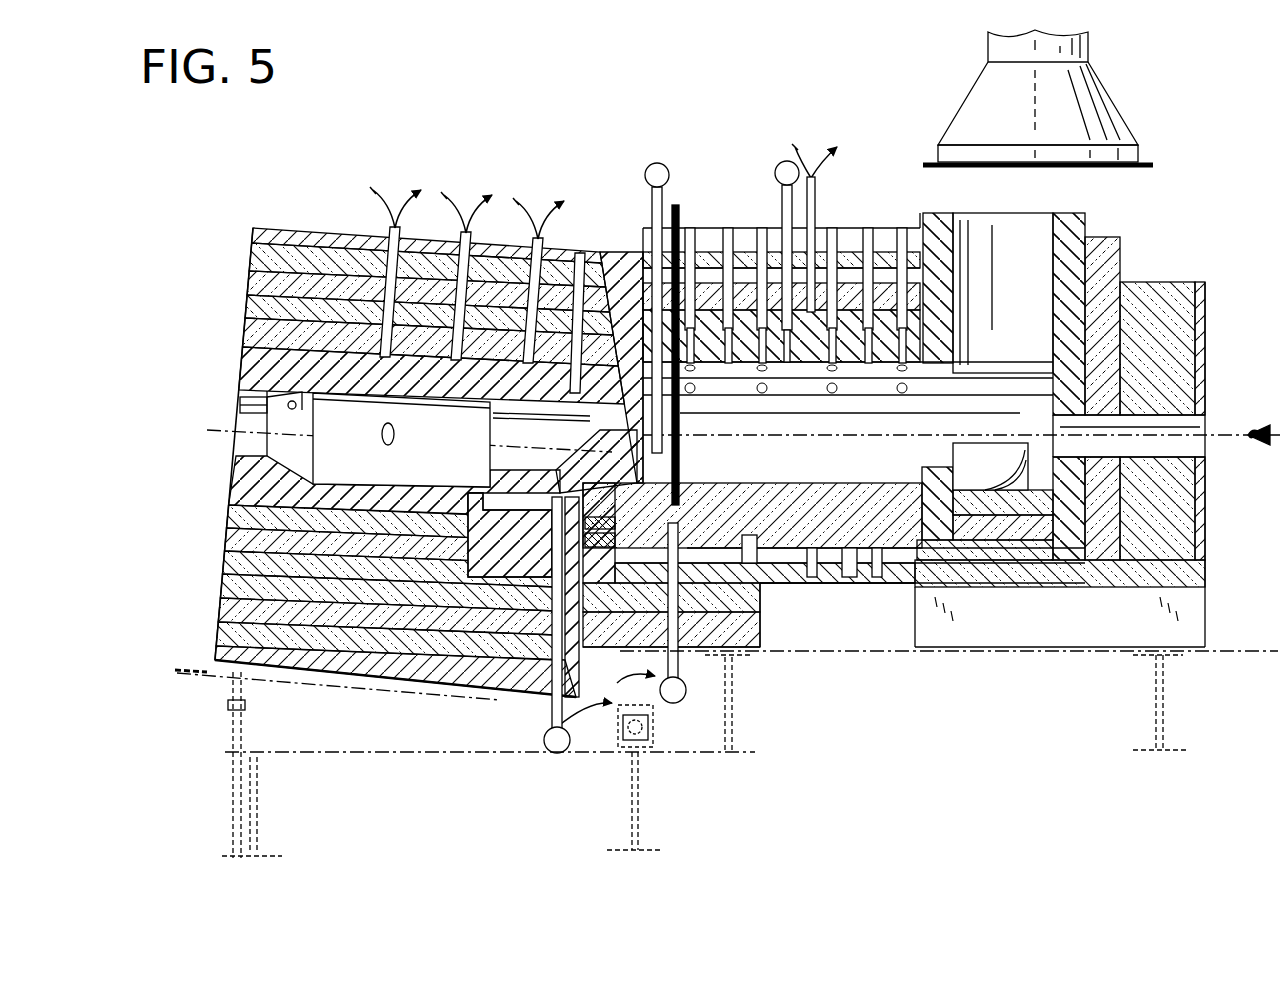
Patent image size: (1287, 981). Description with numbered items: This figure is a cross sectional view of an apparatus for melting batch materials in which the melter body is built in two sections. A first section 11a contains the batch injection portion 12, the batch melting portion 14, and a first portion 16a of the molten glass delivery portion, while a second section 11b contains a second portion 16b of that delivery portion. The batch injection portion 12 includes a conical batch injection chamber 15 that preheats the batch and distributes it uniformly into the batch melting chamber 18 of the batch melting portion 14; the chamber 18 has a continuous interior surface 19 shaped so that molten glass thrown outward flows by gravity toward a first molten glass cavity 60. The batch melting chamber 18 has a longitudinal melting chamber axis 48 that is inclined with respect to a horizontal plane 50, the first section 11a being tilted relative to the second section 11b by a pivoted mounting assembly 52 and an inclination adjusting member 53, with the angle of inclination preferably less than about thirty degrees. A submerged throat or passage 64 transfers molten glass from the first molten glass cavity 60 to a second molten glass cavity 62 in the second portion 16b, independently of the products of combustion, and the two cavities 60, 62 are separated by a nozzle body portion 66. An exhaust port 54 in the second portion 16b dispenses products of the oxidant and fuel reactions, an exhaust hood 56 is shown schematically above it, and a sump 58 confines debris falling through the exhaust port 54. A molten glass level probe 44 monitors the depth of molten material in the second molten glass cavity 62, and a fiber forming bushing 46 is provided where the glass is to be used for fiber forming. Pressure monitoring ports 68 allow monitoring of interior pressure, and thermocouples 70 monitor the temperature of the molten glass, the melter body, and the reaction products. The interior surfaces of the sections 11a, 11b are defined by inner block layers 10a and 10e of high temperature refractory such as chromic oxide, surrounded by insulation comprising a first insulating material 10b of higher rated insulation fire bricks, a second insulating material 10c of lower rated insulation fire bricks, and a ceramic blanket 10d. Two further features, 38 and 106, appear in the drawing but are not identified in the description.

The inner block layer 10a is at (228, 485).
The first insulating material 10b is at (245, 325).
The second insulating material 10c is at (250, 262).
The ceramic blanket 10d is at (252, 228).
The inner block layer 10e is at (930, 338).
The first section 11a is at (322, 222).
The second section 11b is at (1192, 225).
The batch injection portion 12 is at (213, 365).
The batch melting portion 14 is at (470, 160).
The conical batch injection chamber 15 is at (307, 462).
The first portion of the batch delivery portion 16a is at (433, 776).
The second portion of the batch delivery portion 16b is at (795, 728).
The batch melting chamber 18 is at (362, 478).
The interior surface 19 is at (410, 487).
The channel 38 is at (560, 467).
The molten glass level probe 44 is at (679, 203).
The fiber forming bushing 46 is at (817, 583).
The longitudinal melting chamber axis 48 is at (222, 430).
The horizontal plane 50 is at (332, 755).
The pivoted mounting assembly 52 is at (655, 737).
The inclination adjusting member 53 is at (232, 790).
The exhaust port 54 is at (1037, 282).
The exhaust hood 56 is at (1100, 92).
The sump 58 is at (953, 445).
The first molten glass cavity 60 is at (533, 513).
The second molten glass cavity 62 is at (700, 548).
The submerged throat or passage 64 is at (680, 512).
The nozzle body portion 66 is at (575, 490).
The pressure monitoring ports 68 is at (248, 412).
The thermocouples 70 is at (407, 230).
The sensor 106 is at (706, 285).